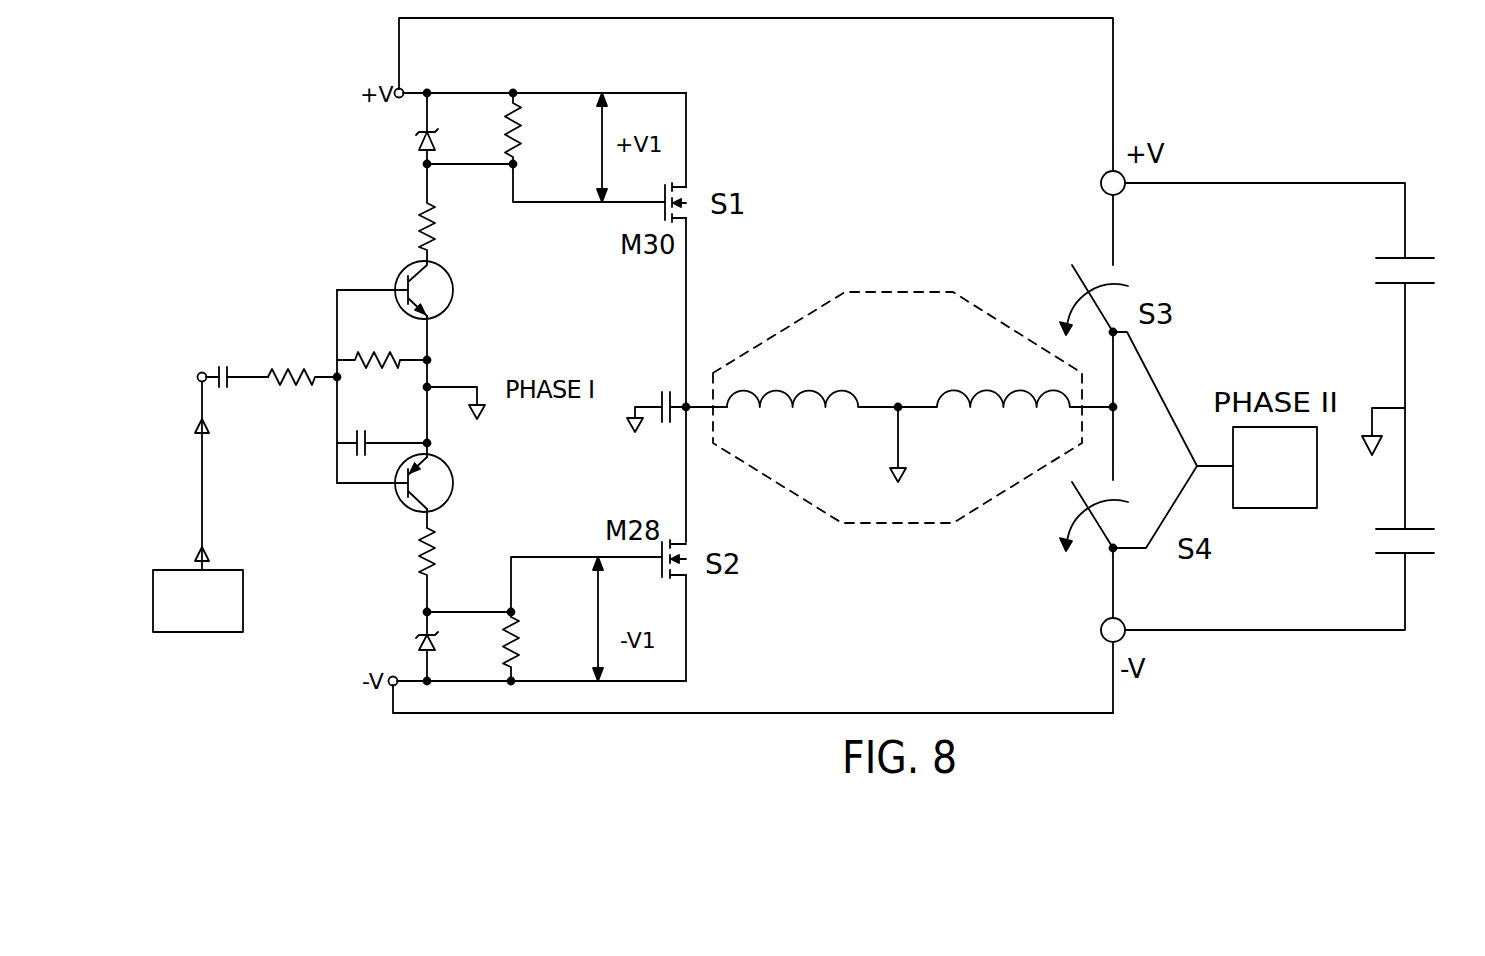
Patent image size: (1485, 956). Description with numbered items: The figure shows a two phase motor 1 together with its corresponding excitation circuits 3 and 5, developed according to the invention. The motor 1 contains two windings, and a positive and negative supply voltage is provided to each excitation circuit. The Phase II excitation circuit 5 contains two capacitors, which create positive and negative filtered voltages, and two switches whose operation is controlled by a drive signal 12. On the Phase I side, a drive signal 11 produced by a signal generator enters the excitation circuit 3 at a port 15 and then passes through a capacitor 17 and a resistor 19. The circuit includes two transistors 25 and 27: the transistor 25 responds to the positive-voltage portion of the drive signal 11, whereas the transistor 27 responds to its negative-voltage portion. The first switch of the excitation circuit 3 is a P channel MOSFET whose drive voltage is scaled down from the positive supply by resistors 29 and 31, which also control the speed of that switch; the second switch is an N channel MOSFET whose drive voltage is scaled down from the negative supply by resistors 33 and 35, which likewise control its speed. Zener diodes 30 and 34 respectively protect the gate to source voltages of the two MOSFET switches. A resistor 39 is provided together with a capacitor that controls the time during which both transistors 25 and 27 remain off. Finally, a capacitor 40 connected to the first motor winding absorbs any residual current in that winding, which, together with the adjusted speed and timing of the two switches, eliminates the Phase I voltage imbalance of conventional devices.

The two phase motor 1 is at (893, 292).
The excitation circuit 3 is at (578, 93).
The excitation circuit 5 is at (1237, 183).
The drive signal 11 is at (243, 600).
The drive signal 12 is at (1280, 508).
The port 15 is at (200, 374).
The capacitor 17 is at (228, 392).
The resistor 19 is at (296, 388).
The transistor 25 is at (443, 268).
The transistor 27 is at (455, 491).
The resistor 29 is at (432, 222).
The zener diode 30 is at (415, 137).
The resistor 31 is at (520, 147).
The resistor 33 is at (432, 553).
The zener diode 34 is at (417, 641).
The resistor 35 is at (519, 660).
The resistor 39 is at (402, 360).
The capacitor 40 is at (668, 427).